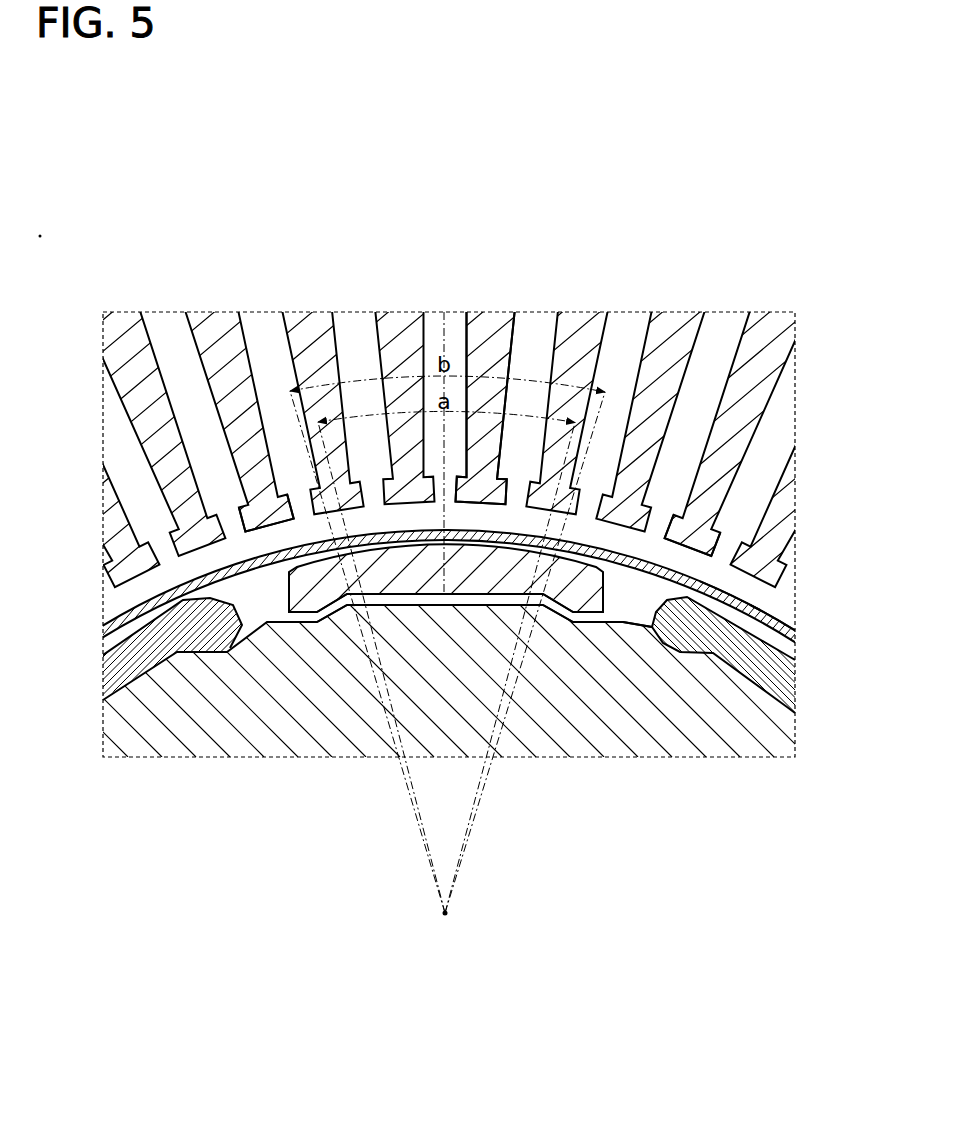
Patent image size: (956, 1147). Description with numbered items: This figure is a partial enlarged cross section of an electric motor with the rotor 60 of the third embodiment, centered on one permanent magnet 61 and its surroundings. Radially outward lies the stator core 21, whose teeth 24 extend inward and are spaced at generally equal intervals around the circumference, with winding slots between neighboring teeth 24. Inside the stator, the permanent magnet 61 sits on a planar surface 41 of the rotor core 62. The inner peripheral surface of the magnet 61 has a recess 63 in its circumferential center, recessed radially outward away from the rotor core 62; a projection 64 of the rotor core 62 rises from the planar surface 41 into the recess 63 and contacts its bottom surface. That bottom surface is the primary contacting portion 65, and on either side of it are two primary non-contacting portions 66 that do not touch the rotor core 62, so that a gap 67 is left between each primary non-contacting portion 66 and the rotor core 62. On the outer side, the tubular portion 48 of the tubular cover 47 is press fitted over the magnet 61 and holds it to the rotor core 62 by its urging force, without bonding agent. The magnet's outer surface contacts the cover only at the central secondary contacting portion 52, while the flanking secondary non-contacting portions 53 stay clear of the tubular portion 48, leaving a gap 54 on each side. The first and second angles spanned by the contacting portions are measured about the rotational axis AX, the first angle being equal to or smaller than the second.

The stator core 21 is at (213, 306).
The teeth 24 is at (231, 413).
The secondary contacting portion 52 is at (468, 535).
The secondary non-contacting portions 53 is at (660, 540).
The gap 54 is at (600, 575).
The rotor 60 is at (158, 594).
The permanent magnet 61 is at (420, 570).
The rotor core 62 is at (238, 717).
The recess 63 is at (415, 596).
The projection 64 is at (490, 600).
The primary contacting portion 65 is at (443, 604).
The primary non-contacting portions 66 is at (530, 598).
The gap 67 is at (562, 606).
The planar surface 41 is at (620, 612).
The tubular cover 47 is at (736, 596).
The tubular portion 48 is at (776, 619).
The rotational axis AX is at (450, 914).